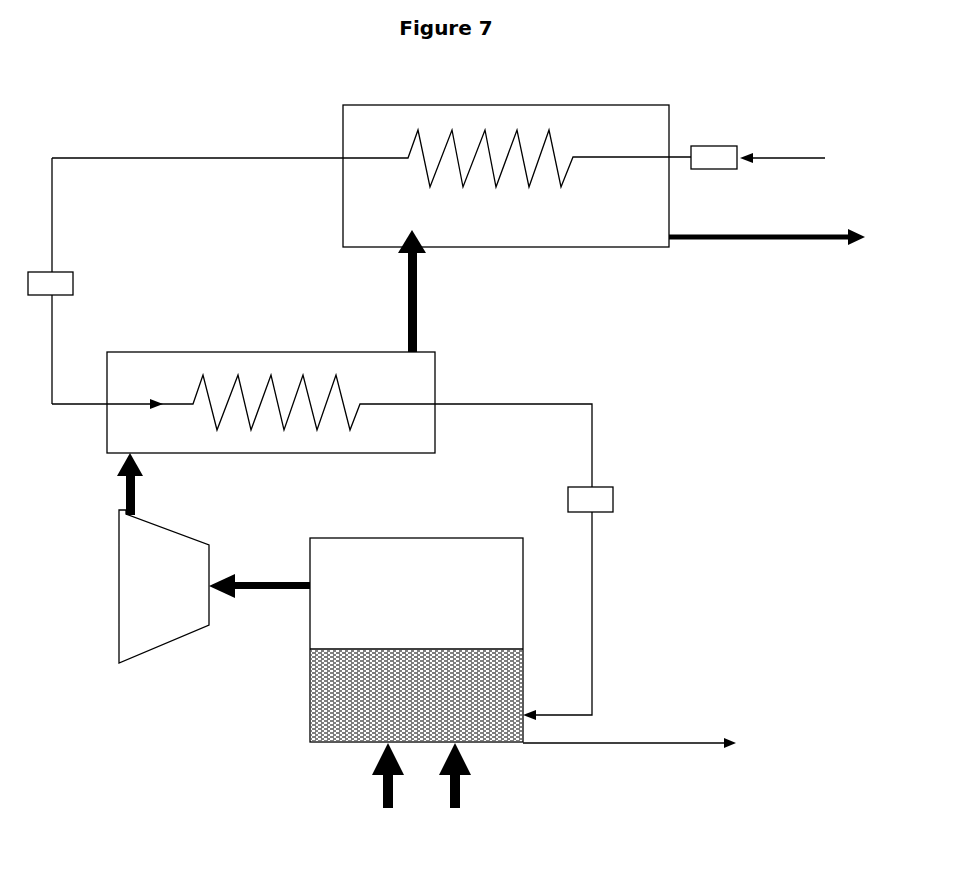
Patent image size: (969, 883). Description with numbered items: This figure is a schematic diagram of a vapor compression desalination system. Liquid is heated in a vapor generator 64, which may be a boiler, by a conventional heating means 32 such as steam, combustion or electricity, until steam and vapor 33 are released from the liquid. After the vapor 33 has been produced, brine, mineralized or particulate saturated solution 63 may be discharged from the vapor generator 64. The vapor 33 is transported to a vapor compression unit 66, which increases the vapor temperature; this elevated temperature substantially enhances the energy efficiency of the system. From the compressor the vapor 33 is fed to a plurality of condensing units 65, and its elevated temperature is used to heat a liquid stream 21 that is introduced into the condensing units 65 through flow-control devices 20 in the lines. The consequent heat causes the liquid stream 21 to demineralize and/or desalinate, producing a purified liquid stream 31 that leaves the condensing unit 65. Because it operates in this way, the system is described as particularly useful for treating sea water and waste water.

The condensing unit 65 is at (585, 105).
The valve 20 is at (708, 146).
The liquid stream 21 is at (821, 150).
The purified liquid stream 31 is at (785, 231).
The vapor compression unit 66 is at (108, 562).
The vapor 33 is at (513, 581).
The vapor generator 64 is at (518, 687).
The brine, mineralized or particulate saturated solution 63 is at (651, 753).
The heating means 32 is at (421, 801).